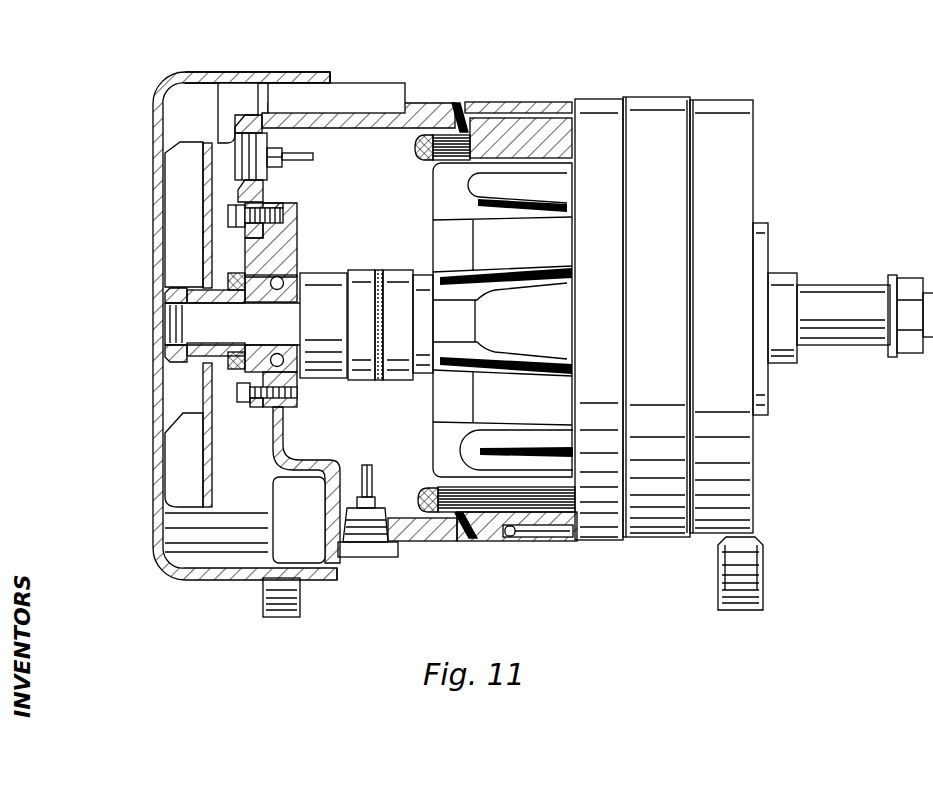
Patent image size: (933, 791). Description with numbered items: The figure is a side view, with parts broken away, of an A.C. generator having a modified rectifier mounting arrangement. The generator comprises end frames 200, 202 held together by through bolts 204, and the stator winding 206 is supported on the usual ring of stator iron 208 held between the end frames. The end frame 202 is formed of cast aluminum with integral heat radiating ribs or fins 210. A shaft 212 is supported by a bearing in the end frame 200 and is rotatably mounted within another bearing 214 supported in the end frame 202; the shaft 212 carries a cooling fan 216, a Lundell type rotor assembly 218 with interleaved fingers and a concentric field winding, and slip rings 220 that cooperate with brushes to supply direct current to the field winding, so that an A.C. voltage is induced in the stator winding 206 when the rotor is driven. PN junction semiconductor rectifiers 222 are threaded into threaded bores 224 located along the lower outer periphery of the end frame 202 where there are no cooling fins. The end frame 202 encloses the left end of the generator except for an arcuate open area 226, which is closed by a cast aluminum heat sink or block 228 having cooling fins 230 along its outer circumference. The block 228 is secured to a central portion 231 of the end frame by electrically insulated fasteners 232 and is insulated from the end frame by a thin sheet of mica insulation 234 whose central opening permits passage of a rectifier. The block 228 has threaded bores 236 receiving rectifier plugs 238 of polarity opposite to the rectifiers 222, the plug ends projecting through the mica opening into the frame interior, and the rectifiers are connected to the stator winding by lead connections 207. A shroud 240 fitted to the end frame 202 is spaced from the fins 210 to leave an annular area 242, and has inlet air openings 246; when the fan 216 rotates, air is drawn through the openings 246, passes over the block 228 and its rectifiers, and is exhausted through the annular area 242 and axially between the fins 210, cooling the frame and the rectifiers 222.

The end frame 200 is at (733, 157).
The end frame 202 is at (420, 113).
The through bolts 204 is at (550, 530).
The stator winding 206 is at (415, 158).
The lead connections 207 is at (290, 152).
The ring of stator iron 208 is at (543, 105).
The heat radiating ribs or fins 210 is at (387, 97).
The shaft 212 is at (840, 272).
The bearing 214 is at (297, 265).
The cooling fan 216 is at (187, 150).
The rotor assembly 218 is at (553, 237).
The slip rings 220 is at (397, 273).
The rectifiers 222 is at (373, 553).
The threaded bores 224 is at (390, 520).
The open area 226 is at (268, 188).
The heat sink or block 228 is at (242, 124).
The cooling fins 230 is at (240, 105).
The central portion 231 is at (247, 252).
The fasteners 232 is at (280, 211).
The mica insulation 234 is at (262, 124).
The threaded bores 236 is at (242, 203).
The rectifier plugs 238 is at (243, 165).
The shroud 240 is at (258, 72).
The annular area 242 is at (330, 84).
The inlet air openings 246 is at (152, 357).